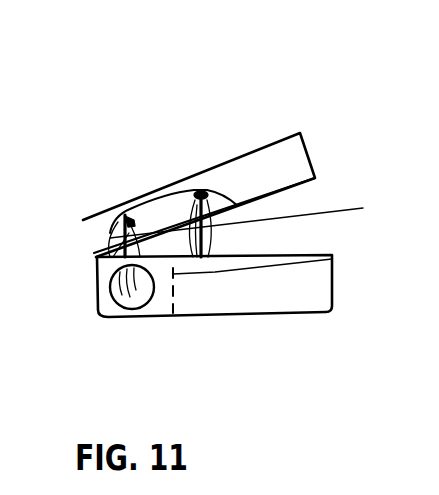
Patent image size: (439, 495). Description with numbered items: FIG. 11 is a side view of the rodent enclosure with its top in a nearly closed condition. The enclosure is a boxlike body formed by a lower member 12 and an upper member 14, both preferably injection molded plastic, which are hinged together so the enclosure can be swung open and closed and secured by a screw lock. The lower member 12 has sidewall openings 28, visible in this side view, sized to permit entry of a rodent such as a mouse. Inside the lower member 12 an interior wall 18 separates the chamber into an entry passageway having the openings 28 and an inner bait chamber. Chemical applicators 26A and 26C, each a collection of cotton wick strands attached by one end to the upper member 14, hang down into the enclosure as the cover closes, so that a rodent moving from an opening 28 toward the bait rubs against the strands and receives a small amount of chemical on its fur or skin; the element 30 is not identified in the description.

The lower member 12 is at (328, 312).
The upper member 14 is at (302, 141).
The interior wall 18 is at (333, 260).
The chemical applicator 26A is at (92, 227).
The chemical applicator 26C is at (266, 221).
The sidewall opening 28 is at (142, 310).
The strap 30 is at (166, 188).